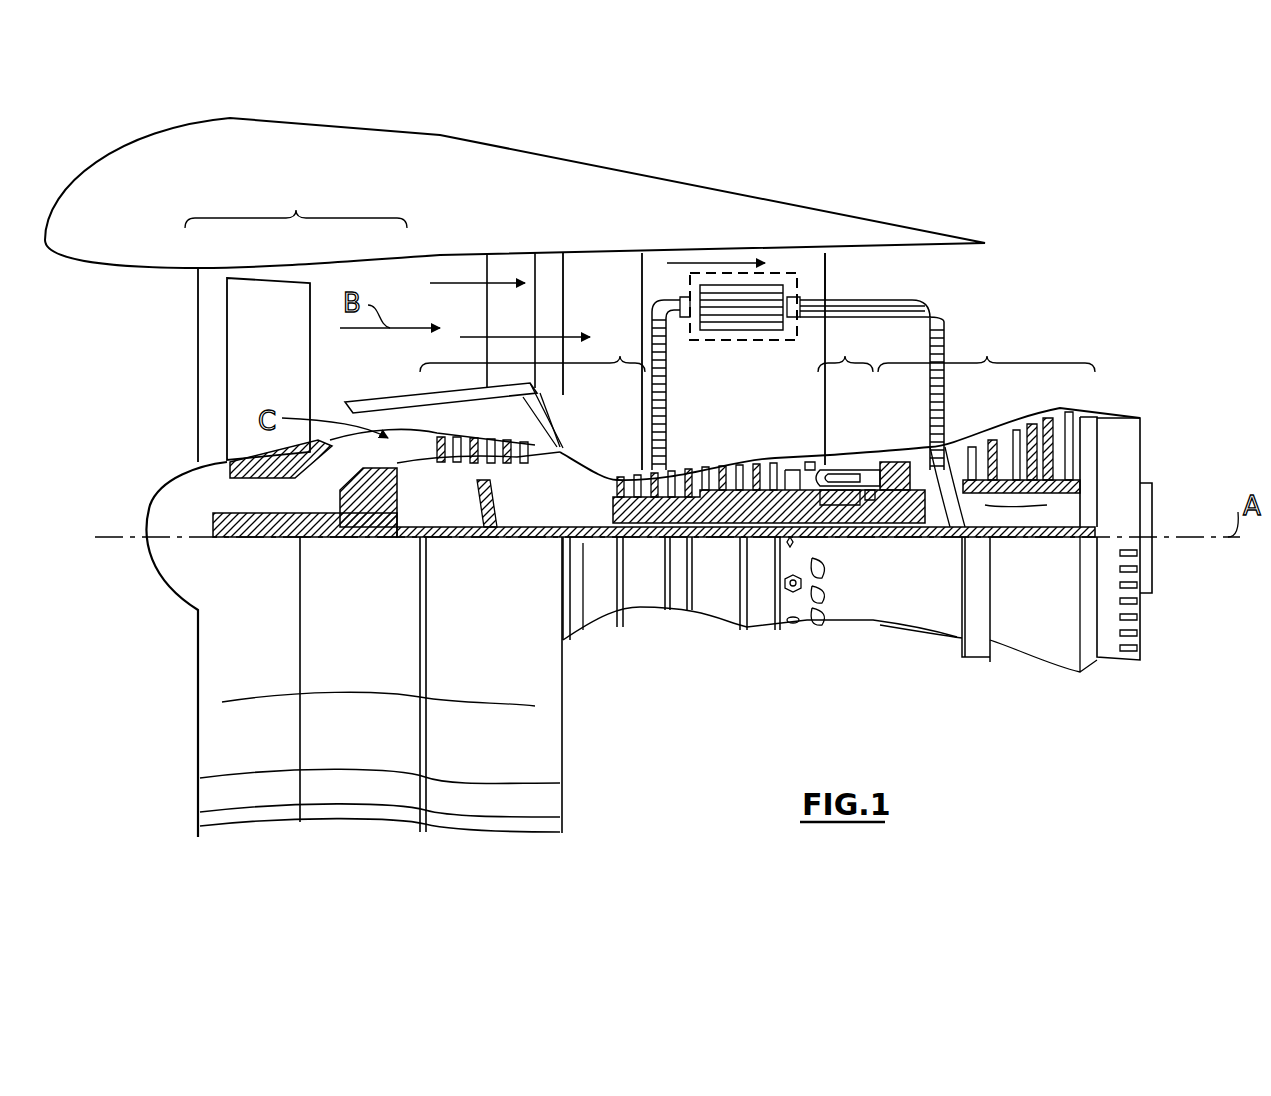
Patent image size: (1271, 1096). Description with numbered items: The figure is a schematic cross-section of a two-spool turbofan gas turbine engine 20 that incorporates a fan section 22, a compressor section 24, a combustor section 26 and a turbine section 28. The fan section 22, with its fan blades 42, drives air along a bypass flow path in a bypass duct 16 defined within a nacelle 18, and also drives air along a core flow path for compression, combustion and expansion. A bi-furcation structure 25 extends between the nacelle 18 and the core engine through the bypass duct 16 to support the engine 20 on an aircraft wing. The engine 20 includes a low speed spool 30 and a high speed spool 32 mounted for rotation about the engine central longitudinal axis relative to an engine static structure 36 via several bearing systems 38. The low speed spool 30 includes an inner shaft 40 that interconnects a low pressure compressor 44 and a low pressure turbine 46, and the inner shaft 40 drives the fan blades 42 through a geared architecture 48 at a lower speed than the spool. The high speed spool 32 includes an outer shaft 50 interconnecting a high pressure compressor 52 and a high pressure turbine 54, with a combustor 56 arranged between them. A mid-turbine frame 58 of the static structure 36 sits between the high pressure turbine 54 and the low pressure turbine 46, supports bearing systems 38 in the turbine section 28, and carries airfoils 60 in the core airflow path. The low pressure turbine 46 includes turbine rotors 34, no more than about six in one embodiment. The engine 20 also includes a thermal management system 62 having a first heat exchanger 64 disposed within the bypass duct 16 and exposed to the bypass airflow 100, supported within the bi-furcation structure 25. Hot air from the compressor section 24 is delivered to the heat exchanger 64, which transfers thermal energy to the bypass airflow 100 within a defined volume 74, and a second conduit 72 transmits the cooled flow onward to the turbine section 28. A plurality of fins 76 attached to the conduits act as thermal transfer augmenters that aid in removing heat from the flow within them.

The bypass duct 16 is at (609, 309).
The nacelle 18 is at (508, 168).
The gas turbine engine 20 is at (1022, 186).
The fan section 22 is at (296, 205).
The compressor section 24 is at (532, 350).
The bi-furcation structure 25 is at (812, 283).
The combustor section 26 is at (845, 350).
The turbine section 28 is at (986, 350).
The low speed spool 30 is at (720, 545).
The high speed spool 32 is at (767, 462).
The turbine rotors 34 is at (1047, 505).
The engine static structure 36 is at (760, 625).
The bearing systems 38 is at (268, 537).
The inner shaft 40 is at (583, 543).
The fan blades 42 is at (283, 381).
The low pressure compressor 44 is at (497, 440).
The low pressure turbine 46 is at (1027, 410).
The geared architecture 48 is at (386, 523).
The outer shaft 50 is at (835, 537).
The high pressure compressor 52 is at (707, 462).
The high pressure turbine 54 is at (893, 475).
The combustor 56 is at (833, 482).
The mid-turbine frame 58 is at (942, 447).
The airfoils 60 is at (975, 545).
The thermal management system 62 is at (1000, 278).
The first heat exchanger 64 is at (777, 300).
The second conduit 72 is at (945, 325).
The defined volume 74 is at (767, 265).
The fins 76 is at (664, 296).
The bypass airflow 100 is at (461, 283).